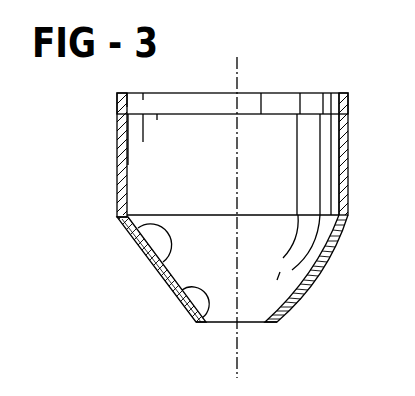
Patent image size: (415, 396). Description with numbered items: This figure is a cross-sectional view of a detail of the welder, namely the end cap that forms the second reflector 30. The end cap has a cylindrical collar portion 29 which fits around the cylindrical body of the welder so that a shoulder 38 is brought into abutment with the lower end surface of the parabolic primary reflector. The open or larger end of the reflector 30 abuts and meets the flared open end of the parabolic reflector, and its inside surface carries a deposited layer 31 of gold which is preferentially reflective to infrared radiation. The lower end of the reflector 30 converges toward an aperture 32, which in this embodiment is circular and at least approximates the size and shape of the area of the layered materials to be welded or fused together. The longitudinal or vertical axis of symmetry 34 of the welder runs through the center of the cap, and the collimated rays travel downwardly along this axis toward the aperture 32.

The cylindrical collar portion 29 is at (117, 155).
The second reflector 30 is at (200, 318).
The layer of gold 31 is at (121, 230).
The aperture 32 is at (248, 322).
The axis of symmetry 34 is at (238, 75).
The shoulder 38 is at (350, 200).